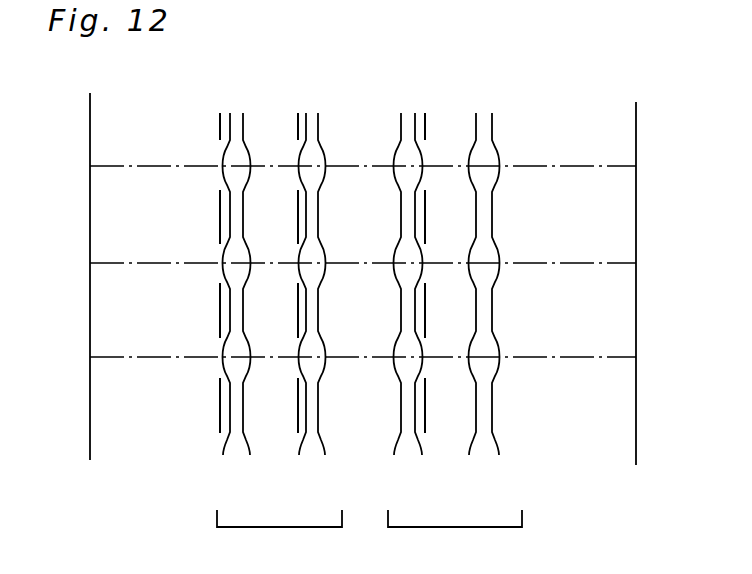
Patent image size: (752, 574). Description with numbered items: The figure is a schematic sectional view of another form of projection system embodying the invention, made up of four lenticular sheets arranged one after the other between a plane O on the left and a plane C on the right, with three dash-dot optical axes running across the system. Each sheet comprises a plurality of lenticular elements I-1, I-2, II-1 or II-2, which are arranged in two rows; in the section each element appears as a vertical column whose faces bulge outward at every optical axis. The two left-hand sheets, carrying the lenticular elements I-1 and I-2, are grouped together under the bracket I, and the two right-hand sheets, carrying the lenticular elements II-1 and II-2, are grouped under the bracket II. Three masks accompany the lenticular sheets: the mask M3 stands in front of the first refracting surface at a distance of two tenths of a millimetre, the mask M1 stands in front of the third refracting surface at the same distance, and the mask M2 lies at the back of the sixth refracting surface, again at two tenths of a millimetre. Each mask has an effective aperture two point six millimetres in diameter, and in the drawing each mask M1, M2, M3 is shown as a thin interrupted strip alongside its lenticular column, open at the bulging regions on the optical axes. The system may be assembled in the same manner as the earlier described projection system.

The object plane O is at (89, 392).
The image plane C is at (636, 402).
The lenticular elements I-1 is at (238, 452).
The lenticular elements I-2 is at (313, 450).
The lenticular elements II-1 is at (408, 452).
The lenticular elements II-2 is at (490, 452).
The mask M1 is at (297, 405).
The mask M2 is at (423, 400).
The mask M3 is at (218, 405).
The first lens group I is at (279, 539).
The second lens group II is at (455, 539).